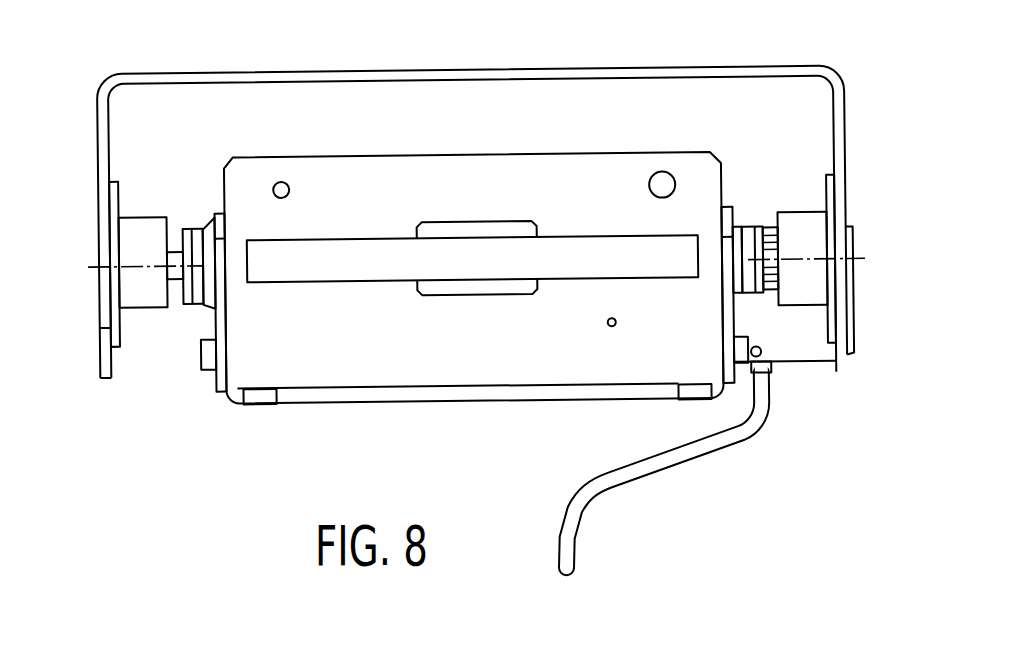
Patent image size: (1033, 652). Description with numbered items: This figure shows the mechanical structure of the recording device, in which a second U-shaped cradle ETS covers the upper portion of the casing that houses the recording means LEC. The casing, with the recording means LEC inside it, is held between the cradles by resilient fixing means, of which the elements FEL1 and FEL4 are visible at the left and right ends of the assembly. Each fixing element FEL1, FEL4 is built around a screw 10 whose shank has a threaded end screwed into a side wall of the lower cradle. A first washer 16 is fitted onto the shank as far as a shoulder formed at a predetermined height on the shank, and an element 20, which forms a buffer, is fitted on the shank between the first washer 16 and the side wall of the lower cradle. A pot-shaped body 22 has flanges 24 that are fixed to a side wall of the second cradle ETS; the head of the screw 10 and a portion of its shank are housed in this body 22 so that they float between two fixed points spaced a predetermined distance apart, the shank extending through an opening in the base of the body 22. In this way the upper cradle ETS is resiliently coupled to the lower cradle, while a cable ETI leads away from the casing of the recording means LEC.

The second U-shaped cradle ETS is at (342, 78).
The pot-shaped body 22 is at (150, 220).
The flanges 24 is at (110, 340).
The resilient fixing element FEL1 is at (150, 308).
The screw 10 is at (181, 305).
The first washer 16 is at (200, 305).
The buffer element 20 is at (205, 332).
The recording means LEC is at (428, 364).
The electrical cable ETI is at (600, 409).
The resilient fixing element FEL4 is at (797, 313).